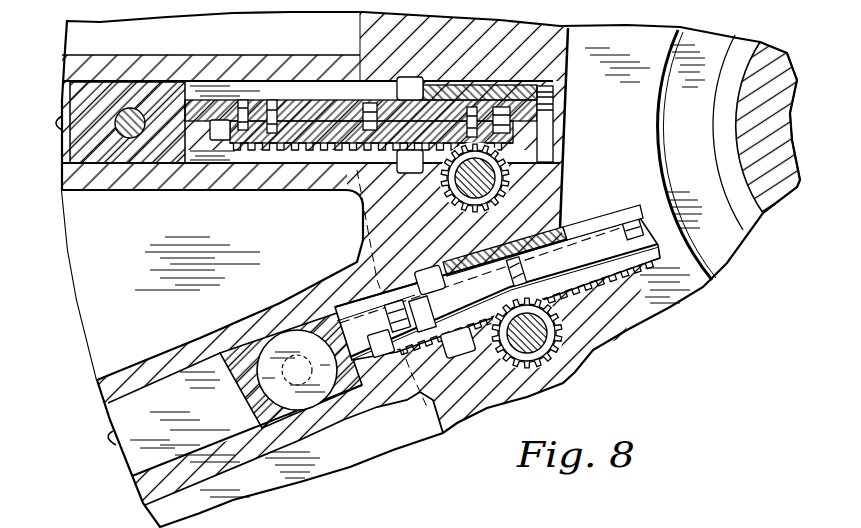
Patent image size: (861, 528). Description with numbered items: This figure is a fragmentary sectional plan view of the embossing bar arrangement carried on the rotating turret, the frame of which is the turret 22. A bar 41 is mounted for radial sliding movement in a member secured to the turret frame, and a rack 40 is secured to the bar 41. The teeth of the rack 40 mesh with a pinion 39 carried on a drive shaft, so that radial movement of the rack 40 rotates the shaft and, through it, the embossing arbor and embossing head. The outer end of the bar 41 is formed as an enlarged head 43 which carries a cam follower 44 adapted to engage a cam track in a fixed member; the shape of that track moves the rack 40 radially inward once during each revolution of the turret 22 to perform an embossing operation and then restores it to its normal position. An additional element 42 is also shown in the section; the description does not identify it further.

The turret frame 22 is at (652, 312).
The pinion 39 is at (468, 204).
The rack 40 is at (543, 140).
The bar 41 is at (544, 98).
The cavity 42 is at (362, 224).
The enlarged head 43 is at (118, 175).
The cam follower 44 is at (340, 425).